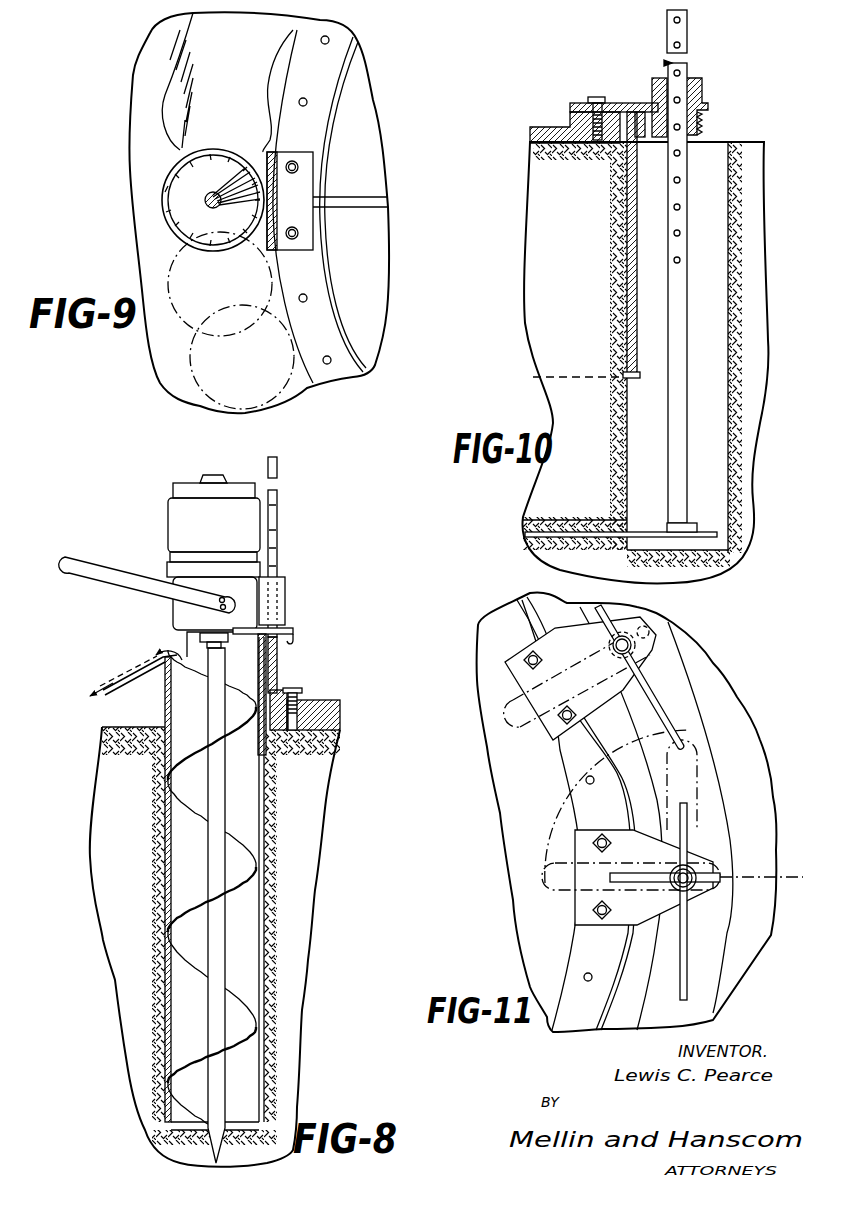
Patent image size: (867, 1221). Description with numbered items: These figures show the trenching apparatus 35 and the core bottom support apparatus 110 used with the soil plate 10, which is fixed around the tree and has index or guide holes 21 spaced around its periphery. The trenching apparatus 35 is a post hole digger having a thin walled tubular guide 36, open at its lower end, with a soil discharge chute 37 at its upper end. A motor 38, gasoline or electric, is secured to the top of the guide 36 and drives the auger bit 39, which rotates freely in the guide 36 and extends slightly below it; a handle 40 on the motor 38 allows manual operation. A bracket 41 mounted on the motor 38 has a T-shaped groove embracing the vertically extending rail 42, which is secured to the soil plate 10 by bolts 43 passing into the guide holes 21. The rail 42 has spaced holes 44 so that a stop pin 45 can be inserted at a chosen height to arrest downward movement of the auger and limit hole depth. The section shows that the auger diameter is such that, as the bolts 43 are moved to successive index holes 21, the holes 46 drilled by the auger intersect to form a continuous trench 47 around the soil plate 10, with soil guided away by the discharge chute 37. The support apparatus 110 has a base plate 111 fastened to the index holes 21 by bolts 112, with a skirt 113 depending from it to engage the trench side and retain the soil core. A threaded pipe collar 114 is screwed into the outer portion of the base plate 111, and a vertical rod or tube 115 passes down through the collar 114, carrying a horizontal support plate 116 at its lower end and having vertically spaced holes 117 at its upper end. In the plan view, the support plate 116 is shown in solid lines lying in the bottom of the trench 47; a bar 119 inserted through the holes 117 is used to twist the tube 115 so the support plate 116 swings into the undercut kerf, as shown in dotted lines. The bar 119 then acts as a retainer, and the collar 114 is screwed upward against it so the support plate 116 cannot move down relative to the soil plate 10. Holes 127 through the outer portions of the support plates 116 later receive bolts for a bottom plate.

In FIG. 9, the soil plate 10 is at (362, 106).
In FIG. 10, the soil plate 10 is at (535, 128).
In FIG. 8, the soil plate 10 is at (329, 698).
In FIG. 11, the soil plate 10 is at (492, 784).
In FIG. 9, the index or guide holes 21 is at (308, 298).
In FIG. 8, the trenching apparatus 35 is at (118, 561).
In FIG. 8, the tubular guide 36 is at (260, 818).
In FIG. 8, the soil discharge chute 37 is at (103, 692).
In FIG. 8, the motor 38 is at (178, 517).
In FIG. 9, the auger bit 39 is at (178, 212).
In FIG. 8, the auger bit 39 is at (193, 806).
In FIG. 8, the handle 40 is at (113, 577).
In FIG. 8, the bracket 41 is at (285, 599).
In FIG. 9, the rail 42 is at (276, 190).
In FIG. 8, the rail 42 is at (276, 518).
In FIG. 9, the bolts 43 is at (300, 236).
In FIG. 8, the bolts 43 is at (293, 689).
In FIG. 8, the holes 44 is at (277, 536).
In FIG. 8, the stop pin 45 is at (284, 632).
In FIG. 9, the holes 46 is at (202, 347).
In FIG. 9, the trench 47 is at (206, 88).
In FIG. 10, the support apparatus 110 is at (637, 58).
In FIG. 10, the base plate 111 is at (645, 88).
In FIG. 10, the bolts 112 is at (592, 85).
In FIG. 10, the skirt 113 is at (634, 241).
In FIG. 10, the pipe collar 114 is at (703, 100).
In FIG. 10, the rod or tube 115 is at (688, 338).
In FIG. 11, the rod or tube 115 is at (630, 648).
In FIG. 10, the support plate 116 is at (657, 531).
In FIG. 11, the support plate 116 is at (503, 714).
In FIG. 10, the holes 117 is at (680, 178).
In FIG. 10, the bar 119 is at (676, 64).
In FIG. 11, the bar 119 is at (650, 689).
In FIG. 11, the holes 127 is at (705, 870).